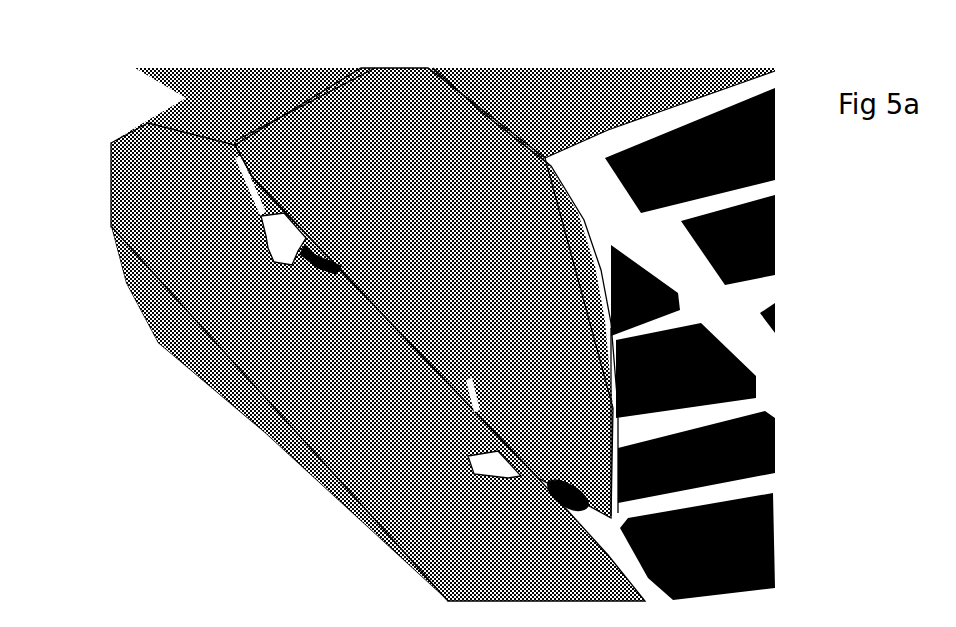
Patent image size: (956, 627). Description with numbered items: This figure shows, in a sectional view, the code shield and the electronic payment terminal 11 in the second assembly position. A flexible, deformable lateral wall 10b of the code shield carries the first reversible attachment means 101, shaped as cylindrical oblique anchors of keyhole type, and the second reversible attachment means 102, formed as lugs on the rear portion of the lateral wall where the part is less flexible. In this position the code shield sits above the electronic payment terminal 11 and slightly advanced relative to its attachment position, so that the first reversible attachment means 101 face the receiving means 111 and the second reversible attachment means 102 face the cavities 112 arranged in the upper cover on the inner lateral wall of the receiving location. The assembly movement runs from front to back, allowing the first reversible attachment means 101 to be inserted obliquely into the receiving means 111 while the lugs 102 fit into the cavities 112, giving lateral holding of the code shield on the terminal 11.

The lateral wall of the code shield 10b is at (367, 90).
The electronic payment terminal 11 is at (275, 426).
The cavities (receiving means) 112 is at (263, 242).
The second reversible attachment means 102 is at (297, 242).
The receiving means 111 is at (483, 463).
The first reversible attachment means 101 is at (533, 458).